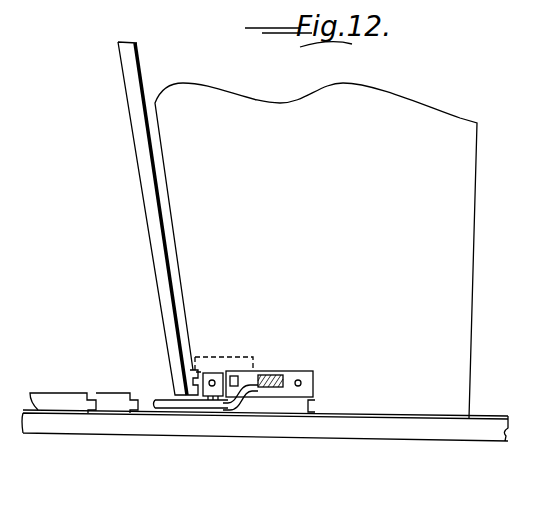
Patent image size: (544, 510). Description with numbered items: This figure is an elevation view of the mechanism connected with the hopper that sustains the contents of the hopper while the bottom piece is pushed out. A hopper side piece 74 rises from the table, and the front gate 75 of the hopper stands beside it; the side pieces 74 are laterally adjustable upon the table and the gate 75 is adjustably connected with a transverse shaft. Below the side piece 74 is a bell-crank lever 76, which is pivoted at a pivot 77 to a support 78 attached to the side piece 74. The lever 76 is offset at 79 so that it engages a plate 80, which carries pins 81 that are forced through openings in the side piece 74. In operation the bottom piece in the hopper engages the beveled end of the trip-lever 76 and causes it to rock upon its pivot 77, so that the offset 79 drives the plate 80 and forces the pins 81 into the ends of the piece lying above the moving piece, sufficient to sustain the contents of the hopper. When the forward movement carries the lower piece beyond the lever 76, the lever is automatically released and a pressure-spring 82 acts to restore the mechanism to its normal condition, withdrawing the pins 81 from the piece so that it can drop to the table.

The side piece 74 is at (453, 358).
The front gate 75 is at (157, 272).
The bell-crank lever 76 is at (170, 402).
The pivot 77 is at (208, 408).
The support 78 is at (217, 398).
The offset 79 is at (257, 392).
The plate 80 is at (297, 392).
The pin 81 is at (234, 370).
The pressure-spring 82 is at (263, 374).